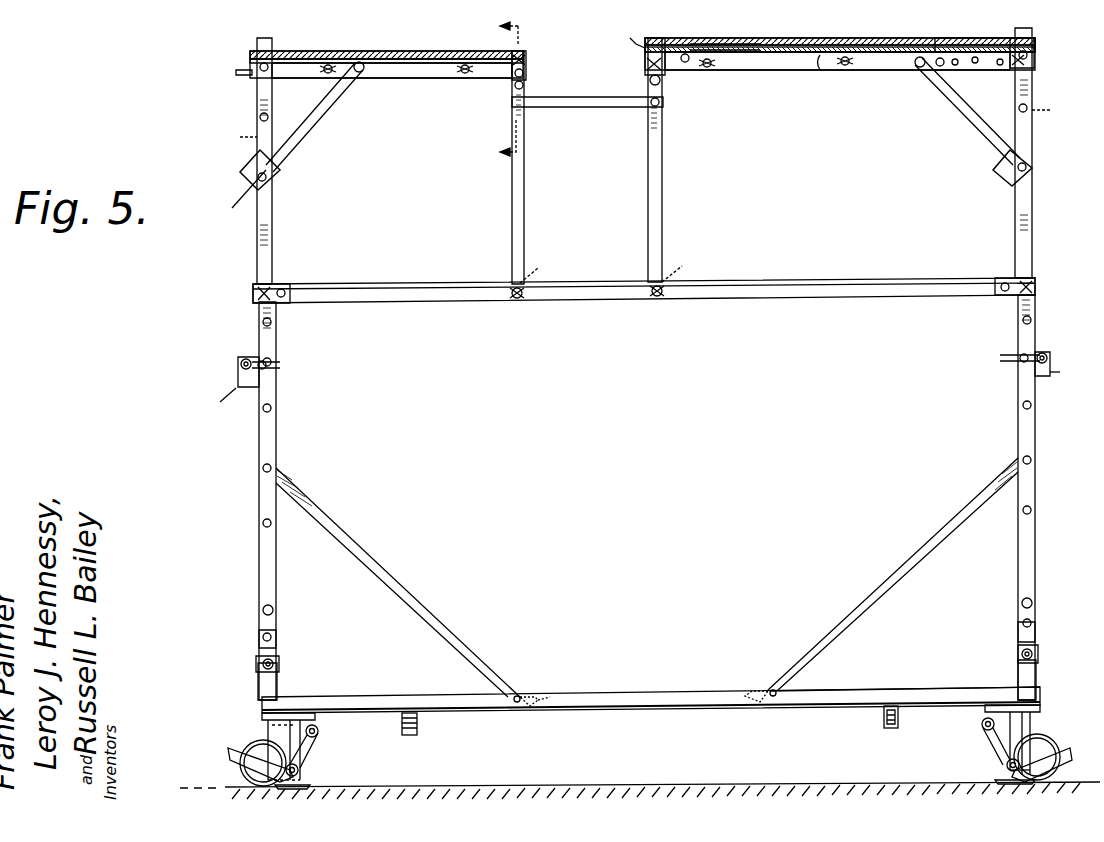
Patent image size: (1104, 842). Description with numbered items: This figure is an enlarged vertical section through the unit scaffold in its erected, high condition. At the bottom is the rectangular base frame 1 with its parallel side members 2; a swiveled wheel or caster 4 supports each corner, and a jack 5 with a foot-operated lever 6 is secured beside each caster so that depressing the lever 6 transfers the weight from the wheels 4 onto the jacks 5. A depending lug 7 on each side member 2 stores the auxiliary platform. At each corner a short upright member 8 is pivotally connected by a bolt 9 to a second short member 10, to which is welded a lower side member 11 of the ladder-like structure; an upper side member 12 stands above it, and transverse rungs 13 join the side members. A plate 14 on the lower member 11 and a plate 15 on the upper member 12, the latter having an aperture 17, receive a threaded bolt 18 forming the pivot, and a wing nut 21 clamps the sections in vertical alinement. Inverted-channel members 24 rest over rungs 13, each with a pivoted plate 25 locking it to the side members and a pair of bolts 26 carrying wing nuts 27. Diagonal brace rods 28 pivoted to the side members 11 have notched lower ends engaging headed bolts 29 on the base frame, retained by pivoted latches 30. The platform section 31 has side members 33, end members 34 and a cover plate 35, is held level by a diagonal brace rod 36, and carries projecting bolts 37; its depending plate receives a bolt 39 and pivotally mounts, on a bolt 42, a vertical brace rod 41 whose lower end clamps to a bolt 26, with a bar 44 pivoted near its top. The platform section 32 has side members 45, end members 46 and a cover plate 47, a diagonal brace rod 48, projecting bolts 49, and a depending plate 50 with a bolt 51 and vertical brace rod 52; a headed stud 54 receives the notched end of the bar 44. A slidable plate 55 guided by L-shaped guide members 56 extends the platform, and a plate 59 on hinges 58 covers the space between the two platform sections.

The base frame 1 is at (604, 706).
The side member 2 is at (872, 700).
The wheel or caster 4 is at (243, 748).
The jack 5 is at (278, 738).
The foot-operated lever 6 is at (232, 752).
The depending lug 7 is at (407, 735).
The upright member 8 is at (280, 685).
The bolt 9 is at (280, 662).
The second relatively short member 10 is at (277, 638).
The lower parallel side member 11 is at (277, 562).
The upper parallel side member 12 is at (273, 236).
The rung 13 is at (260, 70).
The plate 14 is at (216, 403).
The plate 15 is at (522, 88).
The aperture 17 is at (1068, 373).
The threaded bolt 18 is at (238, 366).
The wing nut 21 is at (280, 365).
The member 24 is at (768, 292).
The pivoted plate 25 is at (282, 305).
The bolt 26 is at (516, 299).
The wing nut 27 is at (610, 266).
The diagonal brace rod or bar 28 is at (420, 607).
The headed bolt 29 is at (515, 702).
The pivoted latch 30 is at (548, 683).
The platform section 31 is at (427, 50).
The platform section 32 is at (790, 46).
The side member 33 is at (410, 68).
The end member 34 is at (525, 73).
The cover plate 35 is at (350, 62).
The diagonal brace rod or bar 36 is at (318, 130).
The bolt 37 is at (236, 72).
The bolt 39 is at (526, 58).
The brace rod or bar 41 is at (524, 206).
The bolt 42 is at (525, 85).
The bar 44 is at (580, 102).
The side member 45 is at (775, 65).
The end member 46 is at (644, 62).
The cover plate 47 is at (820, 70).
The diagonal brace rod or bar 48 is at (960, 100).
The bolt 49 is at (707, 67).
The depending plate 50 is at (660, 80).
The bolt 51 is at (687, 52).
The brace rod or bar 52 is at (663, 182).
The headed stud 54 is at (660, 104).
The plate 55 is at (905, 38).
The L-shaped guide member 56 is at (1000, 70).
The hinge 58 is at (630, 32).
The plate 59 is at (742, 31).